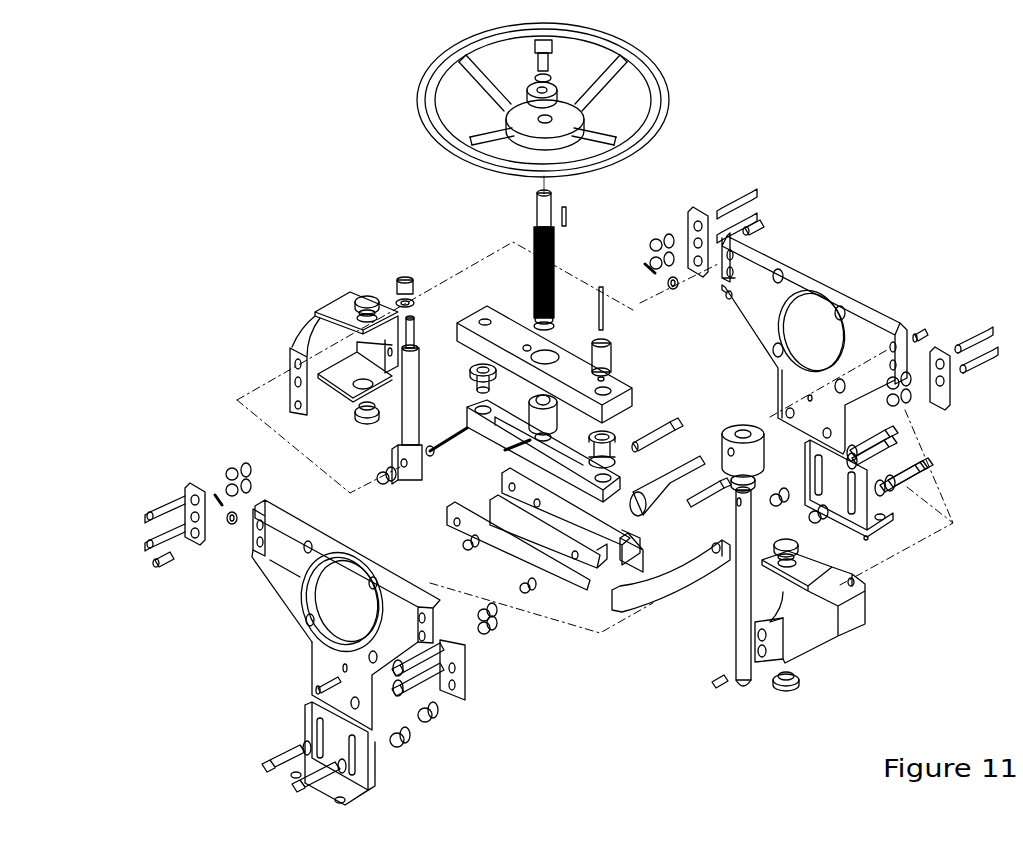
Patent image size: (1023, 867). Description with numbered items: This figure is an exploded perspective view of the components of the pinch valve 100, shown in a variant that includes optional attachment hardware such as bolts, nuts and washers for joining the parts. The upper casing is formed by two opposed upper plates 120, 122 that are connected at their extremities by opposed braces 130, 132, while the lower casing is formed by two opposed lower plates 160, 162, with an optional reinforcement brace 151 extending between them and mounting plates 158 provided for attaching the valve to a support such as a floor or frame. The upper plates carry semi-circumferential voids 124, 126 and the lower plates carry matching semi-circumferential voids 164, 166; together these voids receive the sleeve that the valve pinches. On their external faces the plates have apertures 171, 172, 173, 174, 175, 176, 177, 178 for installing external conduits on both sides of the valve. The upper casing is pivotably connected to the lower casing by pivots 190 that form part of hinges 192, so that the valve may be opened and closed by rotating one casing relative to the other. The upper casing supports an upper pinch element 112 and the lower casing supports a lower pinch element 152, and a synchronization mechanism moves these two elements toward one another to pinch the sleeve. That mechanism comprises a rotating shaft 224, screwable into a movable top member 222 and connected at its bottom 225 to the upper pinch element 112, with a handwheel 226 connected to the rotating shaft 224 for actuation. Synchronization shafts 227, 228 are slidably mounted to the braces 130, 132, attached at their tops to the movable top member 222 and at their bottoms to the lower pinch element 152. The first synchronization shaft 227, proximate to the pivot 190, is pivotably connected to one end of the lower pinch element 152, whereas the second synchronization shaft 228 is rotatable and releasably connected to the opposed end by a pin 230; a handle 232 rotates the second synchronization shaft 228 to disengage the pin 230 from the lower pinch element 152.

The pinch valve 100 is at (972, 118).
The upper pinch element 112 is at (502, 438).
The upper plate 120 is at (778, 252).
The upper plate 122 is at (367, 557).
The semi-circumferential void 124 is at (800, 308).
The semi-circumferential void 126 is at (333, 575).
The brace 130 is at (327, 340).
The brace 132 is at (834, 610).
The reinforcement brace 151 is at (660, 578).
The lower pinch element 152 is at (590, 605).
The mounting plate 158 is at (882, 525).
The lower plate 160 is at (748, 312).
The lower plate 162 is at (273, 582).
The semi-circumferential void 164 is at (820, 353).
The semi-circumferential void 166 is at (353, 627).
The aperture 171 is at (783, 275).
The aperture 172 is at (843, 313).
The aperture 173 is at (313, 560).
The aperture 174 is at (380, 590).
The aperture 175 is at (777, 352).
The aperture 176 is at (895, 402).
The aperture 177 is at (307, 625).
The aperture 178 is at (323, 680).
The pivot 190 is at (162, 565).
The hinge 192 is at (183, 490).
The movable top member 222 is at (470, 317).
The rotating shaft 224 is at (533, 243).
The bottom of rotating shaft 225 is at (533, 317).
The handwheel 226 is at (628, 74).
The first synchronization shaft 227 is at (410, 423).
The second synchronization shaft 228 is at (738, 630).
The pin 230 is at (722, 685).
The handle 232 is at (648, 505).